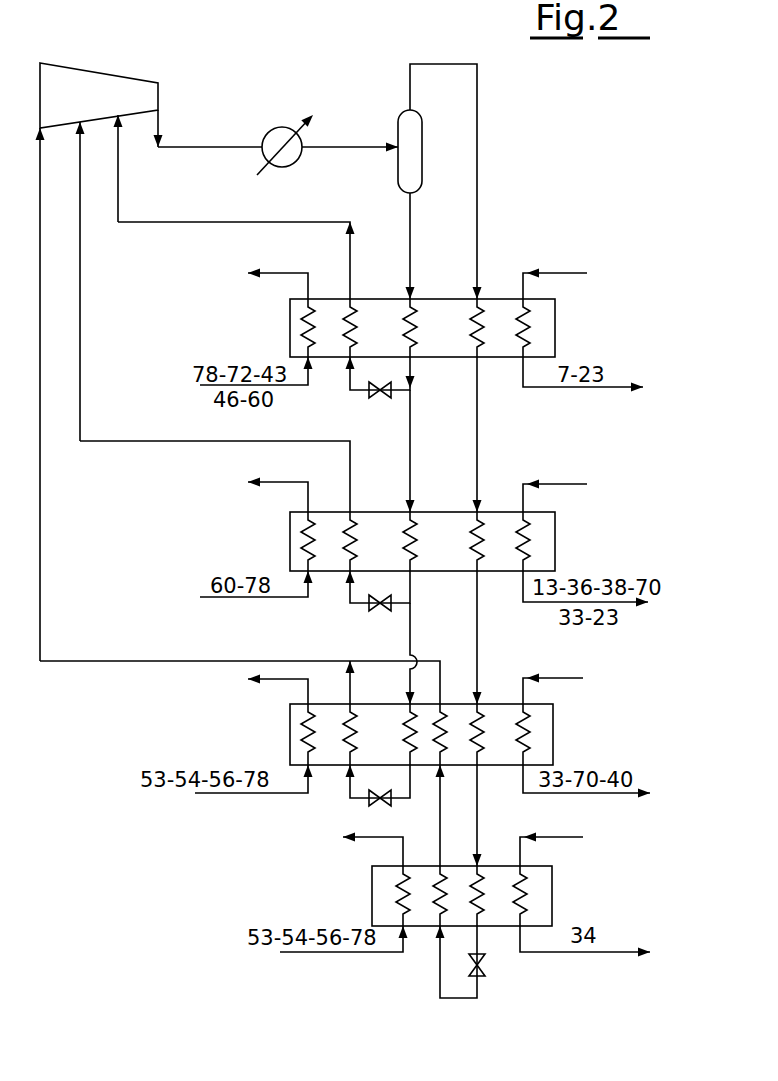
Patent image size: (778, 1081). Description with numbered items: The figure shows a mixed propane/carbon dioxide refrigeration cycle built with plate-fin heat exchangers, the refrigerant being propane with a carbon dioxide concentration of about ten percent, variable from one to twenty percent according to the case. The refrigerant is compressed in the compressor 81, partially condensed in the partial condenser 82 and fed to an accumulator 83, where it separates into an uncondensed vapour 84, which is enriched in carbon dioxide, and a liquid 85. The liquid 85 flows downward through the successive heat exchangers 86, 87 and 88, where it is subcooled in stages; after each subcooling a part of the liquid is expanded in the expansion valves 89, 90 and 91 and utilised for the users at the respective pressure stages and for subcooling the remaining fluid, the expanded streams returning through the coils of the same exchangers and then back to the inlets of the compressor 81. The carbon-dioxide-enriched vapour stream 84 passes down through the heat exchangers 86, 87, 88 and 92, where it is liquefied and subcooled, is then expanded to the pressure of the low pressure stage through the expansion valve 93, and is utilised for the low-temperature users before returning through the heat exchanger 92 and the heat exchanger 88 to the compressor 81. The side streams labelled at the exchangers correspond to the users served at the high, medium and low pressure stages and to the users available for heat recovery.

The compressor 81 is at (120, 77).
The partial condenser 82 is at (283, 127).
The accumulator 83 is at (422, 147).
The uncondensed vapour 84 is at (411, 84).
The liquid 85 is at (411, 229).
The heat exchanger 86 is at (455, 336).
The heat exchanger 87 is at (454, 554).
The heat exchanger 88 is at (472, 746).
The expansion valve 89 is at (381, 397).
The expansion valve 90 is at (381, 611).
The expansion valve 91 is at (381, 806).
The heat exchanger 92 is at (472, 916).
The expansion valve 93 is at (487, 961).